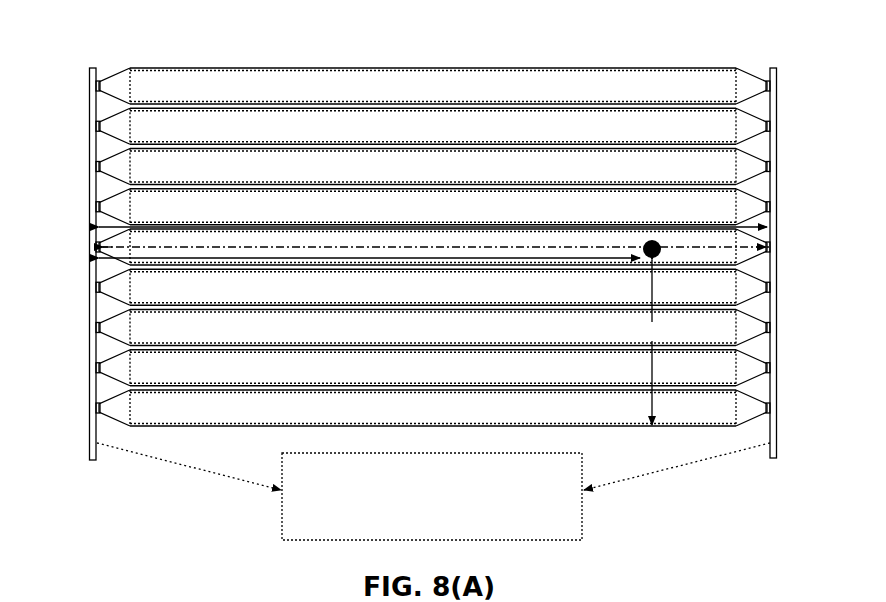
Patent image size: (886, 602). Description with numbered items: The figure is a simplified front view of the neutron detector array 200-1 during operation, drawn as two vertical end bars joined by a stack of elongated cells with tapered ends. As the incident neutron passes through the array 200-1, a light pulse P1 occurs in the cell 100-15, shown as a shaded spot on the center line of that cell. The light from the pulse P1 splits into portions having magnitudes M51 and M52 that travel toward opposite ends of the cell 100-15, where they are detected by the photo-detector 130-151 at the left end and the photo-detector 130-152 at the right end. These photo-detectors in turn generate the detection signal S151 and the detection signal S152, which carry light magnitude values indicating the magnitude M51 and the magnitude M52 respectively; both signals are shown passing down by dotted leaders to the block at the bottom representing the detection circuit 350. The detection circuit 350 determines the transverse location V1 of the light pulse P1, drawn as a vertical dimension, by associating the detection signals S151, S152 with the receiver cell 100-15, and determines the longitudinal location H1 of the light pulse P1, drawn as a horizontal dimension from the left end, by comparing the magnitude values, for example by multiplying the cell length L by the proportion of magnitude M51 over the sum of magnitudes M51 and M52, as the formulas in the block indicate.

The neutron detector array 200-1 is at (76, 66).
The cell 100-15 is at (370, 228).
The photo-detector 130-151 is at (95, 250).
The photo-detector 130-152 is at (772, 247).
The detection circuit 350 is at (342, 536).
The cell length L is at (120, 246).
The light portion magnitude M51 is at (115, 226).
The light portion magnitude M52 is at (748, 244).
The light pulse P1 is at (648, 238).
The longitudinal location H1 is at (399, 260).
The transverse location V1 is at (652, 342).
The detection signal S151 is at (163, 460).
The detection signal S152 is at (700, 462).